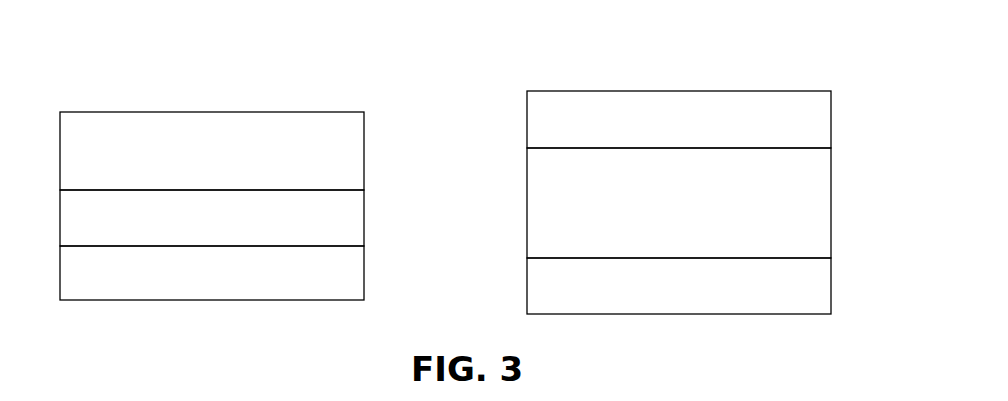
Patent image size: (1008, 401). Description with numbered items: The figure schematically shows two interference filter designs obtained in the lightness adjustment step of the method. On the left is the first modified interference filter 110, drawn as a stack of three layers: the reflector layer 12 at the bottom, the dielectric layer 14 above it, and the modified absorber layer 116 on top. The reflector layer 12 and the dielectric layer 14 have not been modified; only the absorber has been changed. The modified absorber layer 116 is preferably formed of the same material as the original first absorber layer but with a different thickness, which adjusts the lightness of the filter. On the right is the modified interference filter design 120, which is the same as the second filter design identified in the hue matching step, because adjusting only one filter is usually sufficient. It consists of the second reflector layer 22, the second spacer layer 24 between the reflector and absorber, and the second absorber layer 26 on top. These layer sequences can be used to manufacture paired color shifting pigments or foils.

The first modified interference filter 110 is at (228, 179).
The modified absorber layer 116 is at (364, 160).
The first spacer layer 14 is at (364, 213).
The first reflector layer 12 is at (364, 283).
The modified interference filter design 120 is at (710, 177).
The second absorber layer 26 is at (831, 122).
The second spacer layer 24 is at (831, 207).
The second reflector layer 22 is at (831, 280).